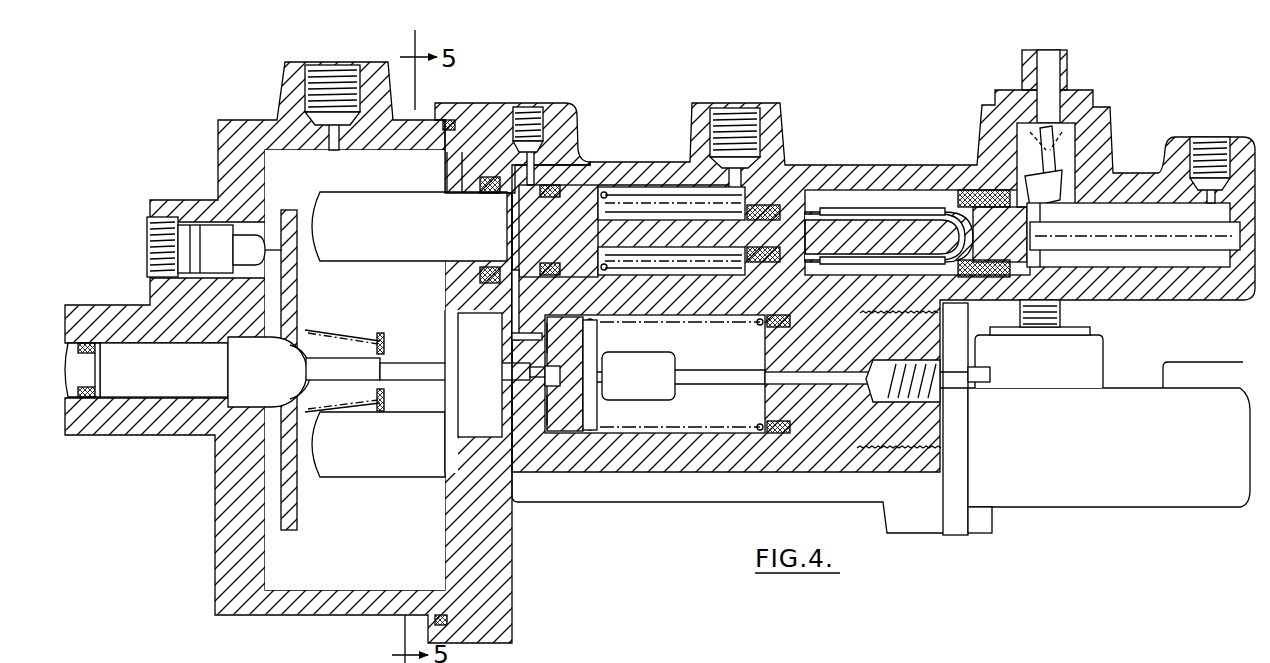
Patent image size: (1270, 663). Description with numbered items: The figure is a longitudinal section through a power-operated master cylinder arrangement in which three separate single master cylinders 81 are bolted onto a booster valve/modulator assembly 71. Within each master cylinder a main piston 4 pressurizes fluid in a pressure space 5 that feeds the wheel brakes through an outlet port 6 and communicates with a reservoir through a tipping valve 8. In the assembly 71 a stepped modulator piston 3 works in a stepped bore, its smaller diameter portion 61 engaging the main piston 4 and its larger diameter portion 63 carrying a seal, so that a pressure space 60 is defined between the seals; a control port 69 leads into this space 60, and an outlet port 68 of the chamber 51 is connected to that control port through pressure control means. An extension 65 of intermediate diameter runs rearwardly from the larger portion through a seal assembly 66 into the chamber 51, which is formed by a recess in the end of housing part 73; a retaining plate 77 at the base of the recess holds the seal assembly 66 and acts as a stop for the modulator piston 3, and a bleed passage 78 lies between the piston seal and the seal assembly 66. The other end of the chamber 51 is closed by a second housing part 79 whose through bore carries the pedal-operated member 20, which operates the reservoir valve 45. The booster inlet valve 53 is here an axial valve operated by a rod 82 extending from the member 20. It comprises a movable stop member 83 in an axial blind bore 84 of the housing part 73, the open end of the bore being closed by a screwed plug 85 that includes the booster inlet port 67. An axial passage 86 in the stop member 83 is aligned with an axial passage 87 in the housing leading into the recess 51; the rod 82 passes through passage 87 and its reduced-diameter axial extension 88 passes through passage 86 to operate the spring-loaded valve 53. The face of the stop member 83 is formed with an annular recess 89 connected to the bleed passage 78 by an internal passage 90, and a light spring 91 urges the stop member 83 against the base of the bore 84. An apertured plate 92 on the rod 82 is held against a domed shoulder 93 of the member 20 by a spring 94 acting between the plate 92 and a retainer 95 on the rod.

The modulator piston 3 is at (773, 164).
The main piston 4 is at (977, 223).
The pressure space 5 is at (1137, 213).
The outlet port 6 is at (1215, 148).
The tipping valve 8 is at (1030, 167).
The pedal-operated member 20 is at (172, 383).
The reservoir valve 45 is at (210, 245).
The chamber 51 is at (343, 572).
The booster inlet valve 53 is at (684, 376).
The pressure space 60 is at (643, 207).
The smaller diameter portion 61 is at (813, 232).
The larger diameter portion 63 is at (582, 200).
The extension 65 is at (422, 238).
The seal assembly 66 is at (485, 168).
The booster inlet port 67 is at (936, 383).
The outlet port 68 is at (335, 88).
The control port 69 is at (730, 130).
The booster valve/modulator assembly 71 is at (733, 508).
The housing part 73 is at (613, 163).
The retaining plate 77 is at (450, 153).
The bleed passage 78 is at (528, 118).
The second housing part 79 is at (226, 561).
The master cylinder 81 is at (1215, 312).
The rod 82 is at (407, 362).
The stop member 83 is at (575, 432).
The axial blind bore 84 is at (747, 433).
The screwed plug 85 is at (830, 433).
The axial passage 86 is at (597, 402).
The axial passage 87 is at (520, 433).
The axial extension 88 is at (558, 433).
The annular recess 89 is at (598, 342).
The internal passage 90 is at (518, 317).
The light spring 91 is at (703, 433).
The apertured plate 92 is at (292, 518).
The domed shoulder 93 is at (280, 387).
The spring 94 is at (331, 327).
The retainer 95 is at (380, 334).